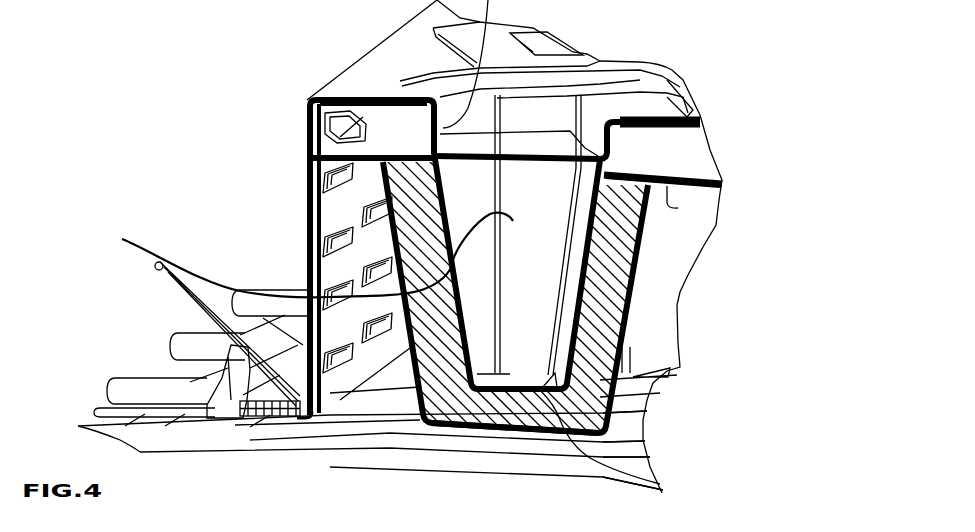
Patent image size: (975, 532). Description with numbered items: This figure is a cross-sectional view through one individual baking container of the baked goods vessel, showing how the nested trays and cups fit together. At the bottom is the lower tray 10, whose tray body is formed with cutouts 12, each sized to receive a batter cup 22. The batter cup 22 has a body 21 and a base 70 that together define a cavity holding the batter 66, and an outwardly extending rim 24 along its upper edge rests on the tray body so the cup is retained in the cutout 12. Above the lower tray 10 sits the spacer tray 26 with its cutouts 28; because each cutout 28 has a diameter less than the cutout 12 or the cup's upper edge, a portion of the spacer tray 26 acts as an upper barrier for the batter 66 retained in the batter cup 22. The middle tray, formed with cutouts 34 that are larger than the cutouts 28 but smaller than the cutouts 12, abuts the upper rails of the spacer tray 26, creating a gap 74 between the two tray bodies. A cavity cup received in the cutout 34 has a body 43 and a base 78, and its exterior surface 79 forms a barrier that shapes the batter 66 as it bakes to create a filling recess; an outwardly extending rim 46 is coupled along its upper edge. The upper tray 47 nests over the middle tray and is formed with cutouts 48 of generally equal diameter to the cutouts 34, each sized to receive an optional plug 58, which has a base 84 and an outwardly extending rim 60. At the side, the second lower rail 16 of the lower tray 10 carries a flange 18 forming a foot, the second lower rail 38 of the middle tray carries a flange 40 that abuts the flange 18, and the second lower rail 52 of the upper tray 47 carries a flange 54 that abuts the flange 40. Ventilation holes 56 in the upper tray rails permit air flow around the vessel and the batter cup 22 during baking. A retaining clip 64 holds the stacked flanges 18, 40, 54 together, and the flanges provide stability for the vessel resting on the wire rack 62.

The lower tray 10 is at (326, 400).
The cutouts 12 is at (663, 188).
The second lower rail 16 is at (330, 210).
The flange 18 is at (275, 417).
The body 21 is at (632, 376).
The batter cup 22 is at (643, 253).
The rim 24 is at (678, 208).
The spacer tray 26 is at (320, 158).
The cutouts 28 is at (604, 166).
The cutouts 34 is at (410, 122).
The second lower rail 38 is at (327, 222).
The flange 40 is at (268, 402).
The body 43 is at (580, 300).
The rim 46 is at (680, 120).
The upper tray 47 is at (330, 95).
The cutouts 48 is at (623, 116).
The second lower rail 52 is at (303, 280).
The flange 54 is at (222, 383).
The ventilation holes 56 is at (333, 393).
The optional plug 58 is at (412, 85).
The rim 60 is at (378, 97).
The wire rack 62 is at (465, 466).
The retaining clip 64 is at (247, 402).
The batter 66 is at (600, 293).
The base 70 is at (600, 473).
The gap 74 is at (690, 155).
The base 78 is at (600, 429).
The exterior surface 79 is at (301, 255).
The base 84 is at (530, 168).